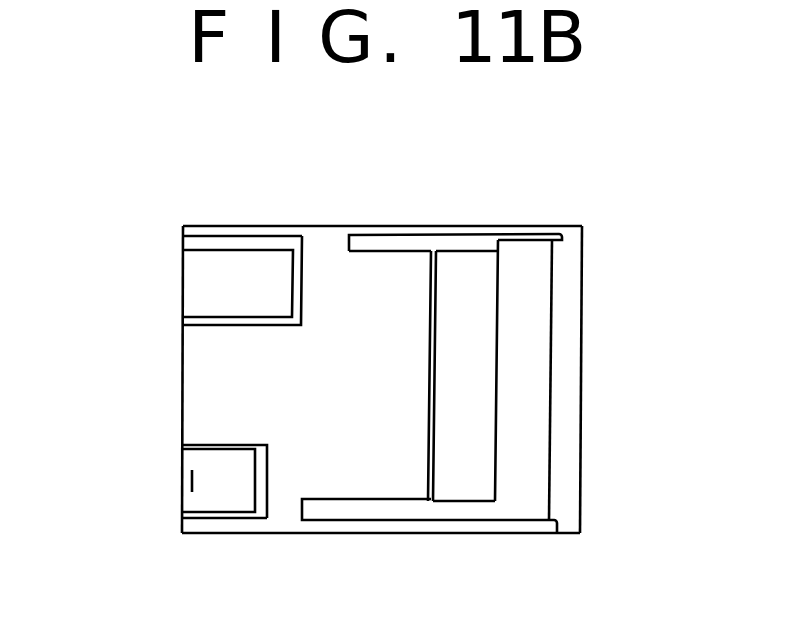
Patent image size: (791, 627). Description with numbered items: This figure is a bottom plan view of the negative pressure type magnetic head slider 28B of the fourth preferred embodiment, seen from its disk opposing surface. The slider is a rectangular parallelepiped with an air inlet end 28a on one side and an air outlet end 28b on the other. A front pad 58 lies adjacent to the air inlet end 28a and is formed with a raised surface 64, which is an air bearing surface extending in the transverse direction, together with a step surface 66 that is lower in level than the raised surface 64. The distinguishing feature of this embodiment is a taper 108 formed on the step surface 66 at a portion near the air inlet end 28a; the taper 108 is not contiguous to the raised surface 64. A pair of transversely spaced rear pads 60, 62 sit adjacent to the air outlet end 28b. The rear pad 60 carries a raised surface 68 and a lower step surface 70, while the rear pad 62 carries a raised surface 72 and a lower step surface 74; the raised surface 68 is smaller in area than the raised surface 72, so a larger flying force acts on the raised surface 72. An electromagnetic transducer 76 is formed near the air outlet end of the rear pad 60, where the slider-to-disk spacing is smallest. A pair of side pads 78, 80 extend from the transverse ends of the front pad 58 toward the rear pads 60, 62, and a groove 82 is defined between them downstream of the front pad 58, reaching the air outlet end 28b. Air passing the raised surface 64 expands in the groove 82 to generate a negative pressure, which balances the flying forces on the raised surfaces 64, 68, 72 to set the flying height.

The negative pressure type magnetic head slider 28B is at (517, 225).
The air inlet end 28a is at (583, 330).
The air outlet end 28b is at (181, 378).
The taper 108 is at (568, 275).
The front pad 58 is at (552, 378).
The step surface 66 is at (528, 445).
The rear pad 62 is at (233, 236).
The side pad 80 is at (369, 234).
The raised surface 72 is at (200, 283).
The step surface 74 is at (302, 289).
The groove 82 is at (362, 386).
The raised surface 68 is at (218, 458).
The electromagnetic transducer 76 is at (190, 480).
The step surface 70 is at (263, 468).
The rear pad 60 is at (208, 520).
The side pad 78 is at (358, 500).
The raised surface 64 is at (465, 492).